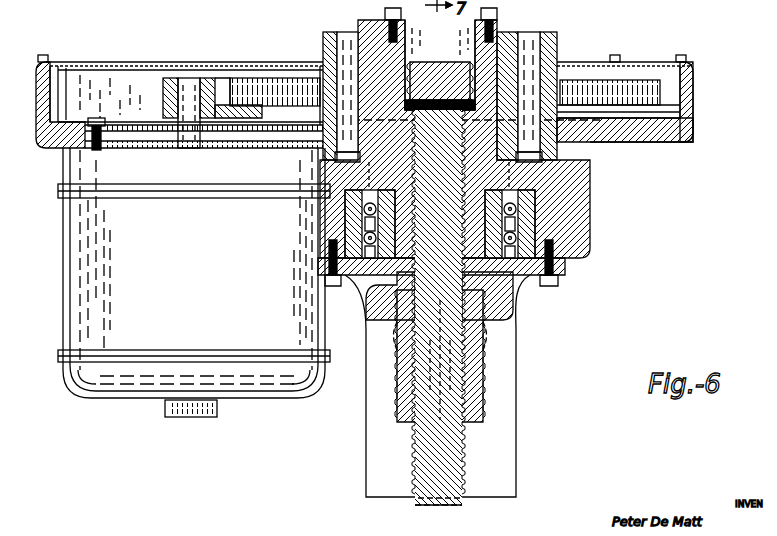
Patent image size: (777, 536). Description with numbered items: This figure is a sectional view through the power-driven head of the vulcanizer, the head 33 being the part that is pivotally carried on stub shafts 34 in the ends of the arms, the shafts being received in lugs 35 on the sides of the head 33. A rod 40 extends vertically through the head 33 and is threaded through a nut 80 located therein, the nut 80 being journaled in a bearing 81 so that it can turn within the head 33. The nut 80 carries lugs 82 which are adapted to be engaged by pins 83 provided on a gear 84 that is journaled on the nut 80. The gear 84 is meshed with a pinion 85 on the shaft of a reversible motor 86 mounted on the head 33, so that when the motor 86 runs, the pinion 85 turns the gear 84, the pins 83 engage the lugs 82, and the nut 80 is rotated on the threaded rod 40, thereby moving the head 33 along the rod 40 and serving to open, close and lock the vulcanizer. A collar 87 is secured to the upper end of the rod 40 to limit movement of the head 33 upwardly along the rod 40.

The head 33 is at (497, 472).
The stub shafts 34 is at (490, 360).
The lugs 35 is at (490, 334).
The rod 40 is at (425, 507).
The nut 80 is at (590, 184).
The bearing 81 is at (522, 222).
The lugs 82 is at (346, 128).
The pins 83 is at (346, 42).
The gear 84 is at (222, 82).
The pinion 85 is at (170, 80).
The reversible motor 86 is at (103, 324).
The collar 87 is at (428, 92).